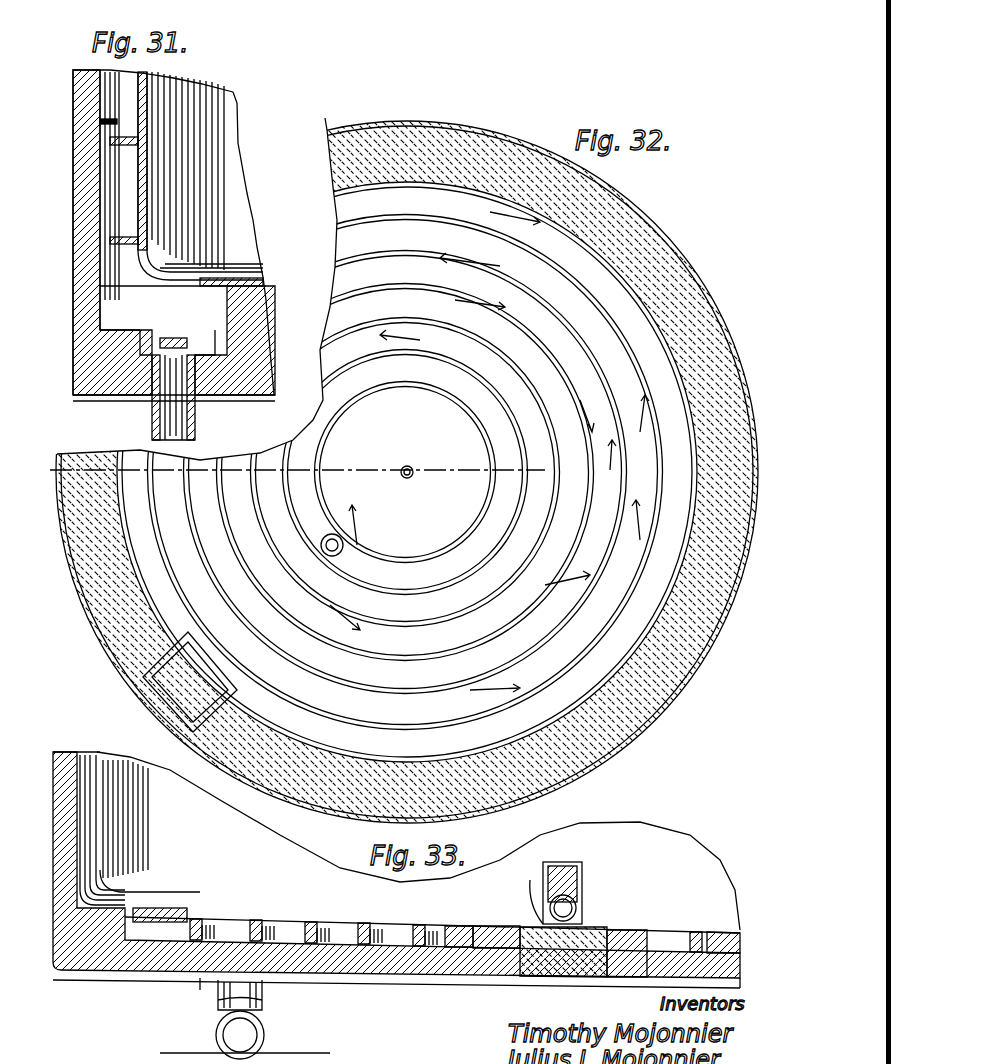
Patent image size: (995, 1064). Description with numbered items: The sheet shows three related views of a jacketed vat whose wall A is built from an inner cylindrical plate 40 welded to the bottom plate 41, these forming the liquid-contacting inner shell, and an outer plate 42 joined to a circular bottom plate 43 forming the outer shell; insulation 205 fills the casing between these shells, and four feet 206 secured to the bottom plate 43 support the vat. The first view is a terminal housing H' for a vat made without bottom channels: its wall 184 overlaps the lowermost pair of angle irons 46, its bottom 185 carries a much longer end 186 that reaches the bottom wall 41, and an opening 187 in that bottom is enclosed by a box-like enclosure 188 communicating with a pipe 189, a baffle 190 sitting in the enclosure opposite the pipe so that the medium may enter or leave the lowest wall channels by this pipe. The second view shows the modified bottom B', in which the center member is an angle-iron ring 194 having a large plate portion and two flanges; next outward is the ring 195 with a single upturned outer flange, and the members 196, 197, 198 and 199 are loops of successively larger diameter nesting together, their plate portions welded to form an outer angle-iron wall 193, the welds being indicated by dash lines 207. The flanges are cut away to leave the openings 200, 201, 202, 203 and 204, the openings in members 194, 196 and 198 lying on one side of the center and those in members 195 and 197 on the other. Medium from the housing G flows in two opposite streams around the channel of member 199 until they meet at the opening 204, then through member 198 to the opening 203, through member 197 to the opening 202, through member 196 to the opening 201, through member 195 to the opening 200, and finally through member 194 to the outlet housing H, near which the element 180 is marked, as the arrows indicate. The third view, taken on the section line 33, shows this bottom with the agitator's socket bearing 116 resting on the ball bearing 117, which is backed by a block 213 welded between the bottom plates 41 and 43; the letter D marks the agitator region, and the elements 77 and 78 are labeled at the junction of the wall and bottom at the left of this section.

In FIG. 31, the inner cylindrical plate 40 is at (142, 82).
In FIG. 33, the inner cylindrical plate 40 is at (112, 752).
In FIG. 31, the bottom plate 41 is at (263, 284).
In FIG. 33, the bottom plate 41 is at (618, 930).
In FIG. 31, the outer plate 42 is at (75, 162).
In FIG. 33, the outer plate 42 is at (55, 772).
In FIG. 31, the circular bottom plate 43 is at (271, 417).
In FIG. 33, the circular bottom plate 43 is at (418, 983).
In FIG. 31, the angle irons 46 is at (118, 170).
In FIG. 33, the angle irons 46 is at (100, 822).
In FIG. 33, the ring 77 is at (75, 912).
In FIG. 33, the liner flange 78 is at (75, 887).
In FIG. 33, the socket bearing 116 is at (582, 884).
In FIG. 33, the ball bearing 117 is at (525, 892).
In FIG. 32, the pivot 180 is at (421, 493).
In FIG. 31, the wall of housing H' 184 is at (97, 226).
In FIG. 31, the bottom of housing H' 185 is at (125, 330).
In FIG. 31, the end of housing bottom 186 is at (240, 318).
In FIG. 31, the opening 187 is at (200, 340).
In FIG. 31, the box-like enclosure 188 is at (194, 397).
In FIG. 31, the pipe 189 is at (195, 439).
In FIG. 31, the baffle 190 is at (163, 340).
In FIG. 33, the angle-iron wall 193 is at (205, 982).
In FIG. 32, the angle-iron ring 194 is at (360, 380).
In FIG. 33, the angle-iron ring 194 is at (676, 938).
In FIG. 32, the ring member 195 is at (400, 350).
In FIG. 33, the ring member 195 is at (386, 928).
In FIG. 32, the ring member 196 is at (436, 318).
In FIG. 33, the ring member 196 is at (332, 926).
In FIG. 32, the ring member 197 is at (404, 284).
In FIG. 33, the ring member 197 is at (278, 924).
In FIG. 32, the ring member 198 is at (440, 250).
In FIG. 33, the ring member 198 is at (228, 920).
In FIG. 32, the ring member 199 is at (418, 213).
In FIG. 33, the ring member 199 is at (165, 918).
In FIG. 32, the opening 200 is at (495, 402).
In FIG. 32, the opening 201 is at (315, 592).
In FIG. 32, the opening 202 is at (552, 368).
In FIG. 32, the opening 203 is at (262, 612).
In FIG. 32, the opening 204 is at (612, 318).
In FIG. 31, the insulation 205 is at (265, 372).
In FIG. 32, the insulation 205 is at (328, 170).
In FIG. 33, the insulation 205 is at (740, 968).
In FIG. 33, the feet 206 is at (264, 1034).
In FIG. 32, the welds 207 is at (270, 628).
In FIG. 33, the backing block 213 is at (560, 960).
In FIG. 32, the section line 33 is at (531, 463).
In FIG. 31, the wall A is at (68, 109).
In FIG. 32, the wall A is at (706, 640).
In FIG. 33, the wall A is at (48, 809).
In FIG. 32, the vat bottom B' is at (693, 292).
In FIG. 33, the vat bottom B' is at (169, 999).
In FIG. 32, the outlet housing H is at (370, 529).
In FIG. 31, the modified housing H' is at (62, 316).
In FIG. 32, the housing G is at (175, 690).
In FIG. 33, the valve D is at (576, 850).